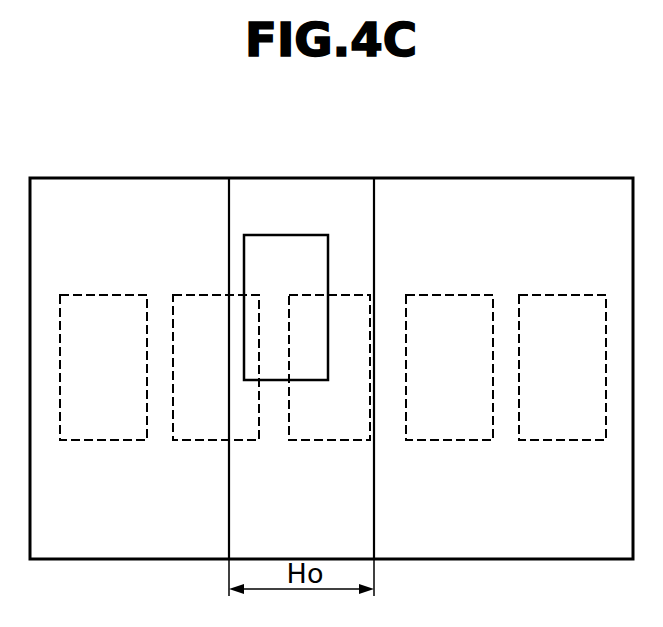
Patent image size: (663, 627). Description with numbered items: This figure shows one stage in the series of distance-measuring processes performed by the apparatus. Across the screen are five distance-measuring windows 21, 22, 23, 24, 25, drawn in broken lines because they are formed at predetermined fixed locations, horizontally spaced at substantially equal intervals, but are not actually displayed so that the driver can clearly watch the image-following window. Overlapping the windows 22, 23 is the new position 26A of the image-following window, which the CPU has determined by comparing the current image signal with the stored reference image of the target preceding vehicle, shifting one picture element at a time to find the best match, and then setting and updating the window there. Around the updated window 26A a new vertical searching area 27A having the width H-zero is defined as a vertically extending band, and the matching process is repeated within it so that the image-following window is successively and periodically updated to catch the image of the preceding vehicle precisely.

The distance-measuring window 21 is at (105, 443).
The distance-measuring window 22 is at (213, 443).
The distance-measuring window 23 is at (345, 441).
The distance-measuring window 24 is at (462, 441).
The distance-measuring window 25 is at (578, 441).
The new position of the image-following window 26A is at (328, 263).
The vertical searching area 27A is at (247, 523).